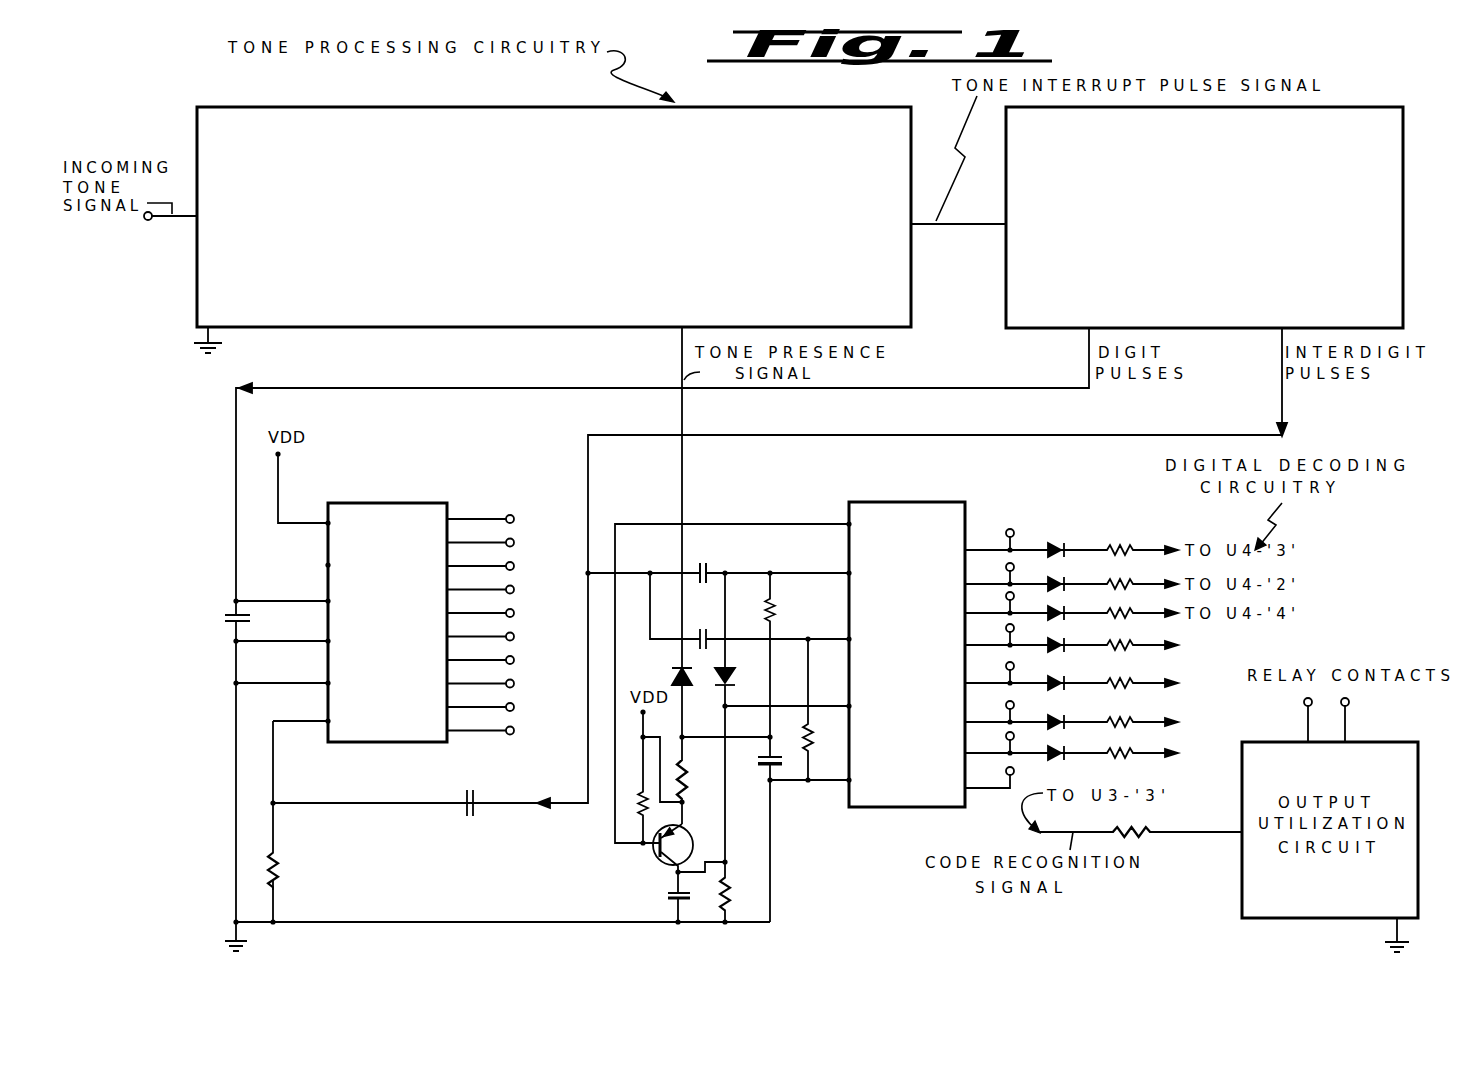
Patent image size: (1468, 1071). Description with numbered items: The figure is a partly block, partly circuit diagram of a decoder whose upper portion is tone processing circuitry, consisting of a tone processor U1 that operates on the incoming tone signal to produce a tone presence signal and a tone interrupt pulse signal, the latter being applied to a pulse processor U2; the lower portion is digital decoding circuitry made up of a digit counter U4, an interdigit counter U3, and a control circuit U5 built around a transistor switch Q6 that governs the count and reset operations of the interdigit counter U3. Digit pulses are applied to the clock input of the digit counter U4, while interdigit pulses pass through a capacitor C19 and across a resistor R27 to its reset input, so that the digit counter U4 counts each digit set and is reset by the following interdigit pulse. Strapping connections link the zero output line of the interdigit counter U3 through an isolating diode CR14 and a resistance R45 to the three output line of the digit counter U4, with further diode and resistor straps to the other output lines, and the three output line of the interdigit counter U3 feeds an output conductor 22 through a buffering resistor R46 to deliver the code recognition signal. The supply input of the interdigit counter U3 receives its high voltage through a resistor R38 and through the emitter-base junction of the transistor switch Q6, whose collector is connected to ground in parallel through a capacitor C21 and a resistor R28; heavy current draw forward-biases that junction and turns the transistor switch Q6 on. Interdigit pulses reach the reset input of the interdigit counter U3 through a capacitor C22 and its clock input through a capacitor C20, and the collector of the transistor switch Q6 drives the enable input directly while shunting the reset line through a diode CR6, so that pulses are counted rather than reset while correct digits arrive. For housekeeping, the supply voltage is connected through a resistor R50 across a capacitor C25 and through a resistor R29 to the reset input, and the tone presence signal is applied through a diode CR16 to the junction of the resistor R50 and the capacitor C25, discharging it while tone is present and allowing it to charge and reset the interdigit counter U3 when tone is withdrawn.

The tone processor U1 is at (554, 217).
The pulse processor U2 is at (1204, 217).
The interdigit counter U3 is at (914, 633).
The digit counter U4 is at (388, 596).
The control circuit U5 is at (641, 839).
The capacitor C19 is at (476, 785).
The capacitor C20 is at (706, 623).
The capacitor C21 is at (668, 912).
The capacitor C22 is at (708, 556).
The capacitor C25 is at (752, 770).
The resistor R27 is at (281, 882).
The resistor R28 is at (733, 910).
The resistor R29 is at (775, 619).
The resistor R38 is at (637, 806).
The resistance R45 is at (1127, 538).
The buffering resistor R46 is at (1100, 820).
The resistor R50 is at (688, 777).
The diode CR6 is at (744, 676).
The isolating diode CR14 is at (1071, 539).
The diode CR16 is at (671, 677).
The transistor switch Q6 is at (664, 868).
The output conductor 22 is at (1218, 832).